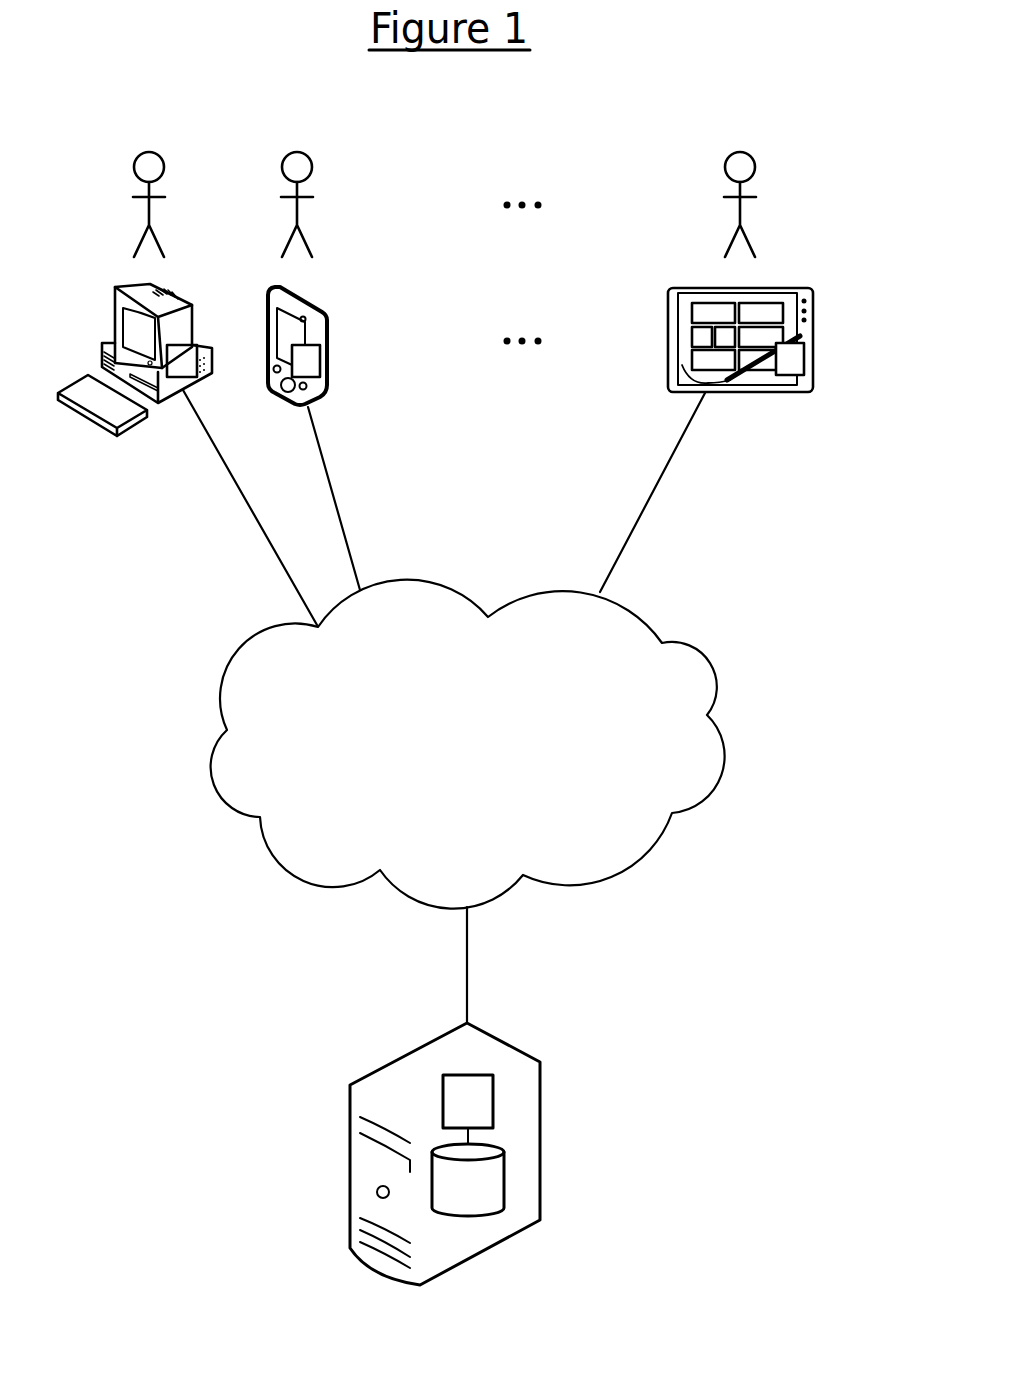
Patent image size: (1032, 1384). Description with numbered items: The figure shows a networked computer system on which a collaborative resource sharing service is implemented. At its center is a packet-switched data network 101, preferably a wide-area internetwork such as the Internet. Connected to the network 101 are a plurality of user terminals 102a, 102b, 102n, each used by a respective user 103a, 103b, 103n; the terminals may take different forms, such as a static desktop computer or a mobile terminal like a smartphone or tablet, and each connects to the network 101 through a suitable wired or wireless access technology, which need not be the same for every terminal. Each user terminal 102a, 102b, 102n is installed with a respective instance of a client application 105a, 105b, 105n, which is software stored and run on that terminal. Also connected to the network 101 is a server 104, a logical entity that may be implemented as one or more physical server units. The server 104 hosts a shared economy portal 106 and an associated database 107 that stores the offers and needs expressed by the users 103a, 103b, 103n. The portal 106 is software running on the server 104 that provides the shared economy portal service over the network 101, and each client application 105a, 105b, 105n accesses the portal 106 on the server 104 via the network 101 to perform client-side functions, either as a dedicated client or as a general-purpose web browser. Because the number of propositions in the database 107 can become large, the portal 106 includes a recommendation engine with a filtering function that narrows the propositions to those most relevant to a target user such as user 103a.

The packet-switched data network 101 is at (700, 657).
The user terminal 102a is at (177, 297).
The user terminal 102b is at (315, 302).
The user terminal 102n is at (790, 285).
The user 103a is at (157, 153).
The user 103b is at (305, 153).
The user 103n is at (748, 153).
The server 104 is at (540, 1125).
The client application 105a is at (247, 330).
The client application 105b is at (315, 363).
The client application 105n is at (798, 363).
The shared economy portal 106 is at (493, 1107).
The database 107 is at (507, 1178).